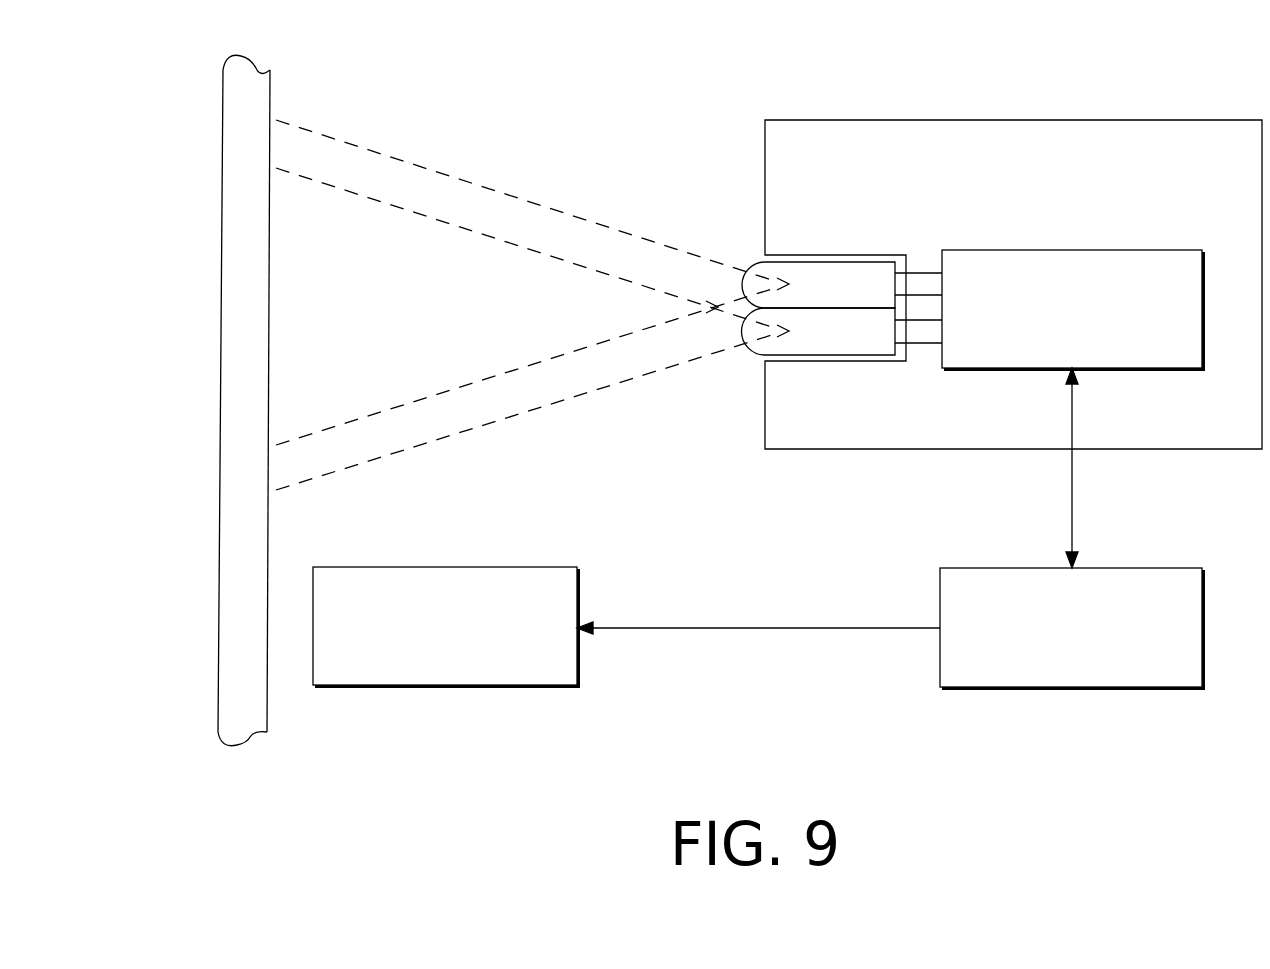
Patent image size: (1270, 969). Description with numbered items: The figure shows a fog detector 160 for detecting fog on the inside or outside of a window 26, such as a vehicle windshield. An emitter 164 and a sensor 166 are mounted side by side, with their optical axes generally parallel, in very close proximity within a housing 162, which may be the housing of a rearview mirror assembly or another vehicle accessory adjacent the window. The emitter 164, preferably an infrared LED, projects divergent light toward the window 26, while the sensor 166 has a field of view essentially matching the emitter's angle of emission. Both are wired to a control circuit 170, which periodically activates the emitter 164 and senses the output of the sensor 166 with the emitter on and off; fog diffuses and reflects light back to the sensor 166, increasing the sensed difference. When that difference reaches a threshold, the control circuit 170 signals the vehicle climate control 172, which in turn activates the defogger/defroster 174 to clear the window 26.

The window 26 is at (236, 128).
The fog detector 160 is at (720, 37).
The housing 162 is at (1062, 120).
The emitter 164 is at (836, 268).
The sensor 166 is at (835, 345).
The control circuit 170 is at (1055, 250).
The climate control 172 is at (1117, 687).
The defogger/defroster 174 is at (473, 685).